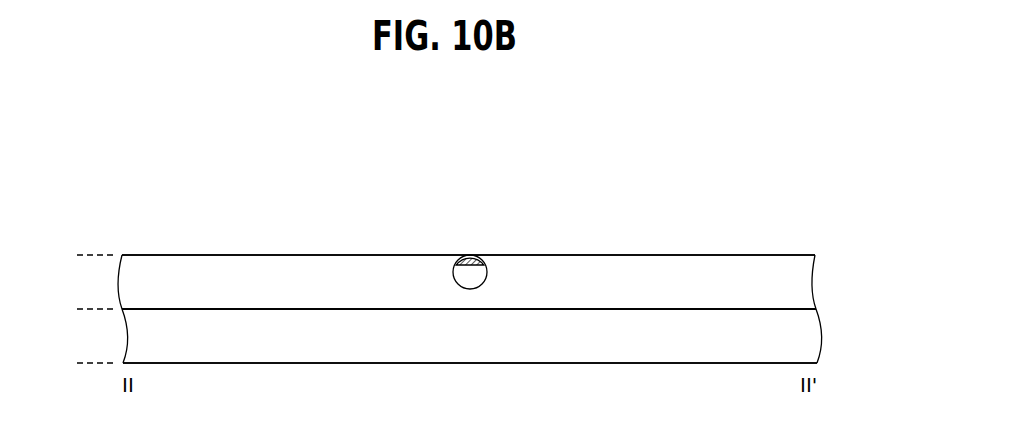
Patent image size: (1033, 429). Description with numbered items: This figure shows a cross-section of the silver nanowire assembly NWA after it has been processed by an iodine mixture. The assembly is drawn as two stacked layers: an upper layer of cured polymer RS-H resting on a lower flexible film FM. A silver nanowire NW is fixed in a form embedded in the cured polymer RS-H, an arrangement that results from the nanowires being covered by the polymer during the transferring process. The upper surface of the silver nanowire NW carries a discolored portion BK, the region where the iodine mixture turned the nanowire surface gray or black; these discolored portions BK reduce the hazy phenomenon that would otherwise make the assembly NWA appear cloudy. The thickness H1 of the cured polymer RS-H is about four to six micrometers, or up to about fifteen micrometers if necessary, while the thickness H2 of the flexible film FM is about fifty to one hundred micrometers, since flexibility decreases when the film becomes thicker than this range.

The silver nanowire assembly NWA is at (727, 163).
The silver nanowire NW is at (461, 277).
The discolored portion BK is at (469, 256).
The cured polymer RS-H is at (802, 282).
The flexible film FM is at (808, 336).
The thickness of cured polymer H1 is at (85, 255).
The thickness of flexible film H2 is at (85, 309).